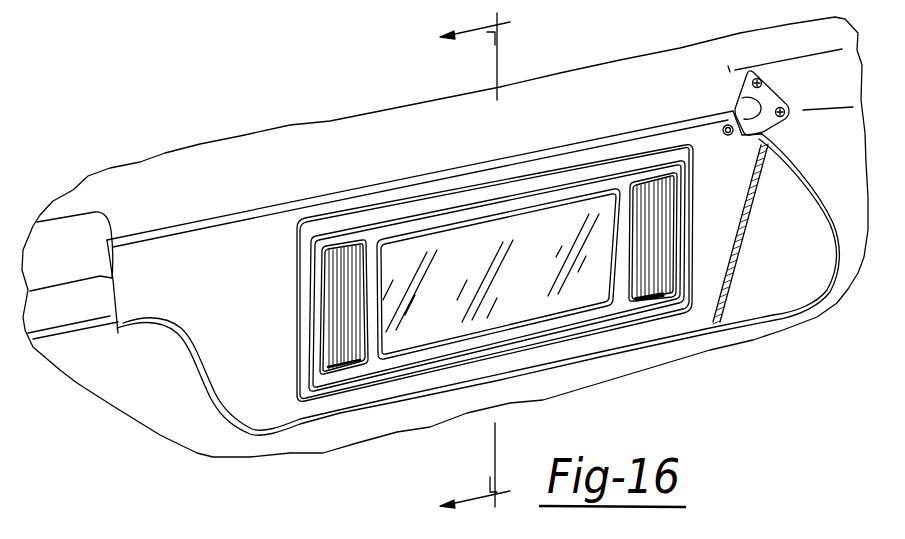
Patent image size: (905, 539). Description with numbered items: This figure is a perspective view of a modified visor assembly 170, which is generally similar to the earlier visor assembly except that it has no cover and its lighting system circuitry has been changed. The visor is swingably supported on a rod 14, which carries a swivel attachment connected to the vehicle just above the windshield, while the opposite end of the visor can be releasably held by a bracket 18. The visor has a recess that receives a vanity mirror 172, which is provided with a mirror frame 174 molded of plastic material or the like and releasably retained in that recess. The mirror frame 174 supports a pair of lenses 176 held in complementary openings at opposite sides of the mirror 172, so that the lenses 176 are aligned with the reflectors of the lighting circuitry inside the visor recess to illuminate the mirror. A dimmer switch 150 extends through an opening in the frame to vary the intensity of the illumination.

The rod 14 is at (747, 108).
The bracket 18 is at (455, 275).
The dimmer switch 150 is at (647, 300).
The visor assembly 170 is at (365, 183).
The vanity mirror 172 is at (562, 303).
The mirror frame 174 is at (298, 327).
The lenses 176 is at (335, 277).